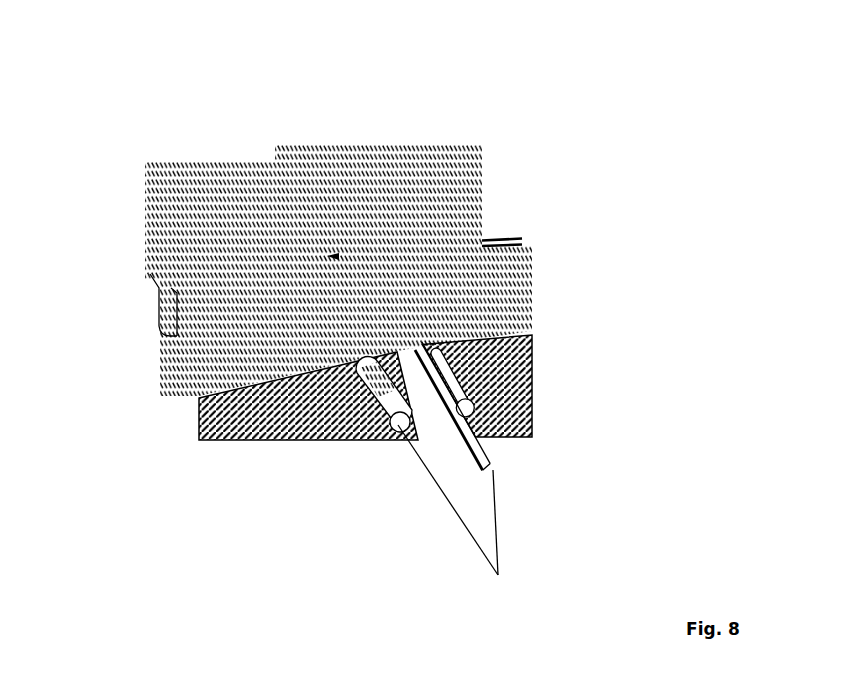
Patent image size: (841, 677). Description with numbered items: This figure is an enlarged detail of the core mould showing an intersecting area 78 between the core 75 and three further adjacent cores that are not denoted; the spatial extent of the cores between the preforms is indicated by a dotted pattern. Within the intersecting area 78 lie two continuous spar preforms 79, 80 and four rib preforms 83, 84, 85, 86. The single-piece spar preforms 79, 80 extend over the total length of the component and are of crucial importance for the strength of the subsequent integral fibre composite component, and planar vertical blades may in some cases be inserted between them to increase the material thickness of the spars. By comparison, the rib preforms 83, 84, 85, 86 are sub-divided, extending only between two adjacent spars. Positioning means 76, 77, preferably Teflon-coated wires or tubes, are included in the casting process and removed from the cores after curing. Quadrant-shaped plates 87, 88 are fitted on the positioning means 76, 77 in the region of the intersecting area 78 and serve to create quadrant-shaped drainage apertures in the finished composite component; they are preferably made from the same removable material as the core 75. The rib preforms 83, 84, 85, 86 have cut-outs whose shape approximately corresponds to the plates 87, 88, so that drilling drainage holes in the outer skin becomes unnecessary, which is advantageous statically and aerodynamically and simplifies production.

The core 75 is at (402, 211).
The positioning means 76 is at (396, 430).
The positioning means 77 is at (467, 407).
The intersecting area 78 is at (349, 121).
The spar preform 79 is at (482, 472).
The spar preform 80 is at (498, 466).
The rib preform 83 is at (160, 337).
The rib preform 84 is at (150, 275).
The rib preform 85 is at (522, 245).
The rib preform 86 is at (521, 238).
The quadrant-shaped plate 87 is at (287, 318).
The quadrant-shaped plate 88 is at (410, 285).